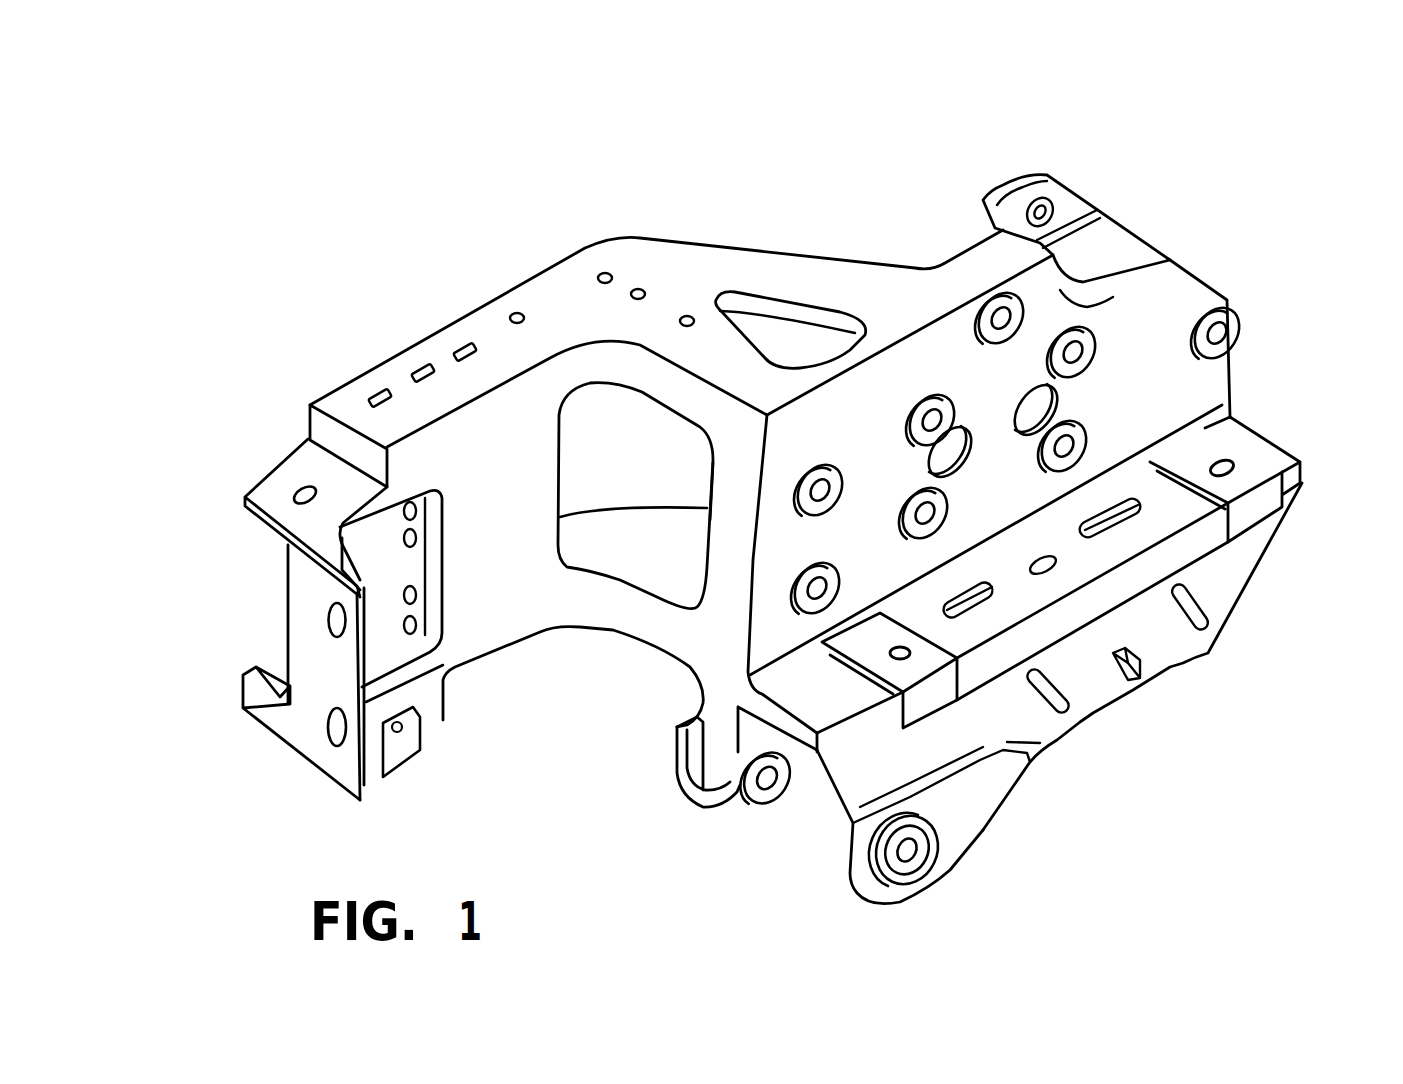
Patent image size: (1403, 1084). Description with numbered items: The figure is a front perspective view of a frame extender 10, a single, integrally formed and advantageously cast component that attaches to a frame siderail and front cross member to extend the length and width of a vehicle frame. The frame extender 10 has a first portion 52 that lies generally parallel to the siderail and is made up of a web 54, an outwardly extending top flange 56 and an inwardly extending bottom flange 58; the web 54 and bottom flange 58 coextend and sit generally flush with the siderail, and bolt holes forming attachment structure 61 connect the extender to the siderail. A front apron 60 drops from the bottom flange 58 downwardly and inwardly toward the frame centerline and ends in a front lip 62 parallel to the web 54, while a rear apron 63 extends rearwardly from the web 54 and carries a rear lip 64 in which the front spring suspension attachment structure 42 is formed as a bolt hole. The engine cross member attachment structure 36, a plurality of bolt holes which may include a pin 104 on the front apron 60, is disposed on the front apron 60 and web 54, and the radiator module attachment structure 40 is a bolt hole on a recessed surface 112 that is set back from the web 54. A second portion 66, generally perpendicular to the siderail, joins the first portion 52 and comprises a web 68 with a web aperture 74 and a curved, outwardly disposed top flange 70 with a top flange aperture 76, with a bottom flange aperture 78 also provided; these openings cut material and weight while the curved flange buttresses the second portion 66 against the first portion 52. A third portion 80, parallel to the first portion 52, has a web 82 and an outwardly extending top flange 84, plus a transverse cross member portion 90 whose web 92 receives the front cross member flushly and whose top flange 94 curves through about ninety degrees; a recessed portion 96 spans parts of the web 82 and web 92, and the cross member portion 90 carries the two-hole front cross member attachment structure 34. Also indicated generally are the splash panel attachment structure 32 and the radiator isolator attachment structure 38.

The frame extender 10 is at (290, 242).
The splash panel attachment structure 32 is at (632, 268).
The front cross member attachment structure 34 is at (290, 747).
The engine cross member attachment structure 36 is at (942, 447).
The radiator isolator attachment structure 38 is at (406, 325).
The radiator module attachment structure 40 is at (1030, 170).
The front spring suspension attachment structure 42 is at (780, 805).
The first portion 52 is at (1213, 290).
The web 54 is at (1163, 382).
The top flange 56 is at (963, 270).
The bottom flange 58 is at (1267, 448).
The front apron 60 is at (1247, 557).
The attachment structure 61 is at (1117, 327).
The front lip 62 is at (992, 767).
The rear apron 63 is at (683, 720).
The rear lip 64 is at (677, 767).
The second portion 66 is at (647, 647).
The web 68 is at (717, 468).
The top flange 70 is at (767, 451).
The web aperture 74 is at (578, 432).
The top flange aperture 76 is at (770, 355).
The bottom flange aperture 78 is at (697, 553).
The third portion 80 is at (483, 333).
The web 82 is at (495, 508).
The top flange 84 is at (350, 390).
The cross member portion 90 is at (250, 487).
The web 92 is at (283, 645).
The top flange 94 is at (323, 510).
The recessed portion 96 is at (380, 637).
The pin 104 is at (1140, 668).
The recessed surface 112 is at (1063, 203).